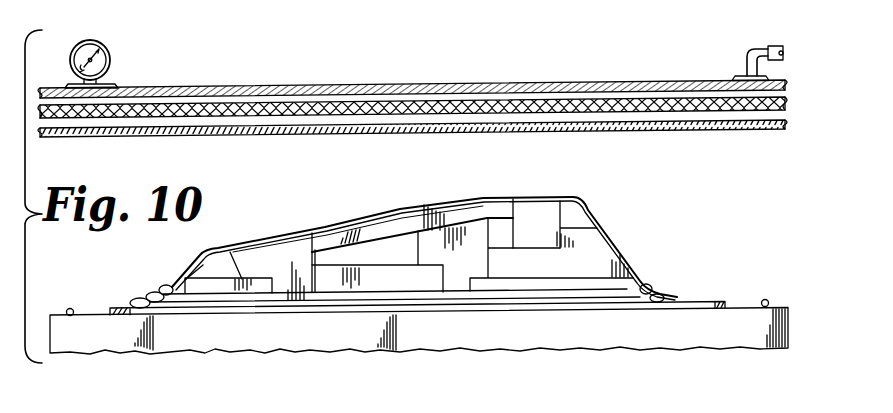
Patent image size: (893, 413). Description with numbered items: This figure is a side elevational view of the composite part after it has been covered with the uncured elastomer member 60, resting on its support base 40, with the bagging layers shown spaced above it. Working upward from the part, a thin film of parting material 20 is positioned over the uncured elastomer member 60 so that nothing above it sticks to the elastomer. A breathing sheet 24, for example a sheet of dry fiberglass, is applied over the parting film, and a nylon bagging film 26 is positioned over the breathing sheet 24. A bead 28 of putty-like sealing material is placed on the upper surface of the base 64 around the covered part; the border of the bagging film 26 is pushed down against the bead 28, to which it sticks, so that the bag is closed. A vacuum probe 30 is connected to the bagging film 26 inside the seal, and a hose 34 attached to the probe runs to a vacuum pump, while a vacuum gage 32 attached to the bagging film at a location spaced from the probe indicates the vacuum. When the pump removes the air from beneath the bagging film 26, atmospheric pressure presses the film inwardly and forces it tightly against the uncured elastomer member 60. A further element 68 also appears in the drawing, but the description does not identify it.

The parting film 20 is at (336, 134).
The breathing sheet 24 is at (386, 114).
The bagging film 26 is at (555, 83).
The bead of sealing material 28 is at (70, 308).
The vacuum probe 30 is at (746, 60).
The vacuum gage 32 is at (112, 62).
The hose 34 is at (776, 46).
The support base 40 is at (711, 338).
The uncured elastomer member 60 is at (612, 241).
The base 64 is at (100, 314).
The caul plate 68 is at (417, 358).